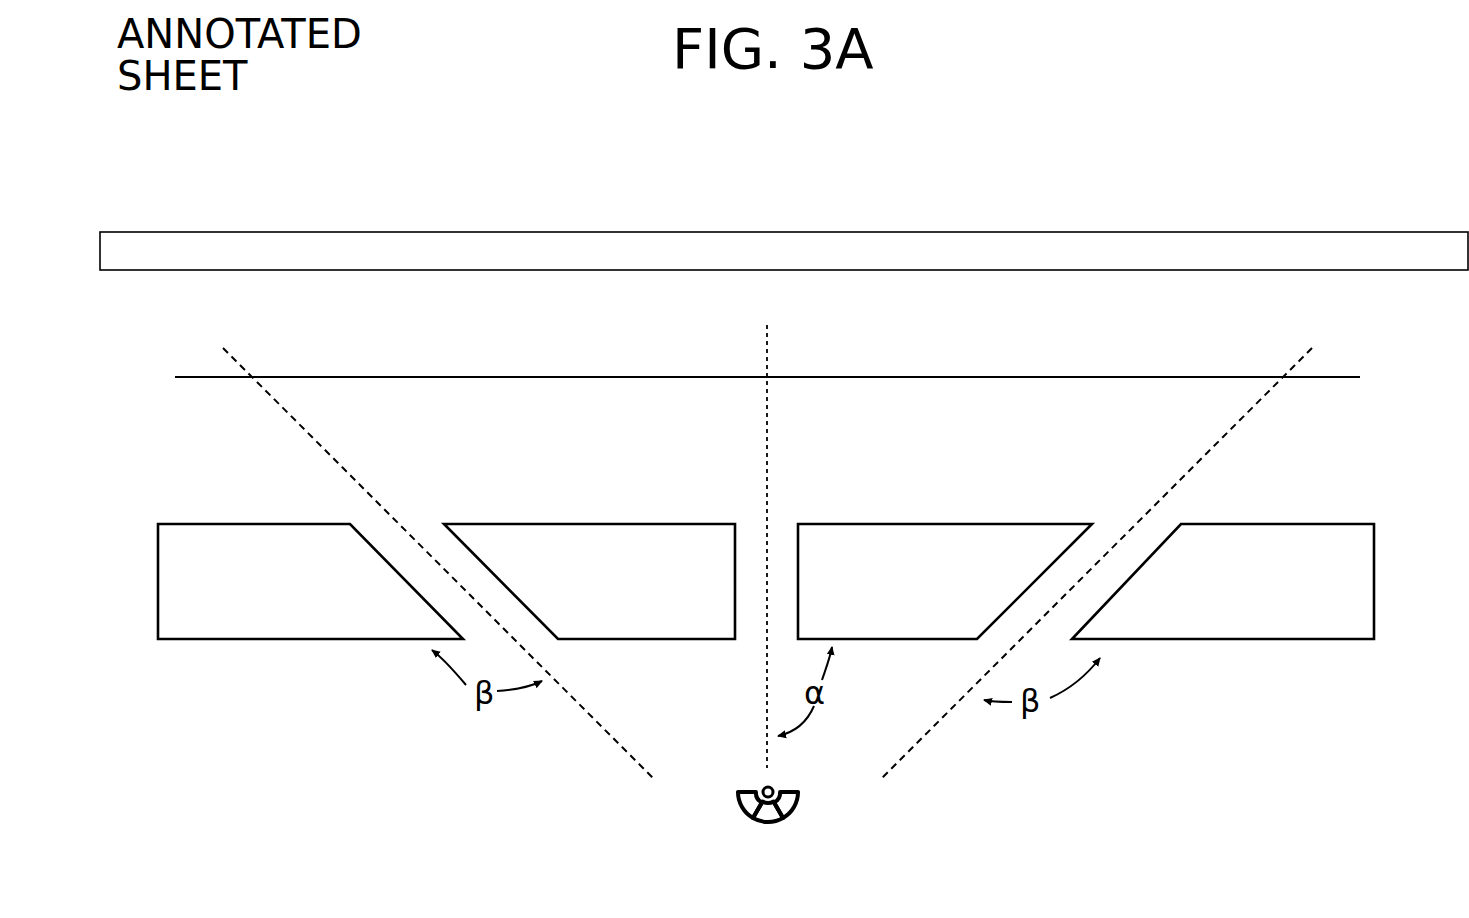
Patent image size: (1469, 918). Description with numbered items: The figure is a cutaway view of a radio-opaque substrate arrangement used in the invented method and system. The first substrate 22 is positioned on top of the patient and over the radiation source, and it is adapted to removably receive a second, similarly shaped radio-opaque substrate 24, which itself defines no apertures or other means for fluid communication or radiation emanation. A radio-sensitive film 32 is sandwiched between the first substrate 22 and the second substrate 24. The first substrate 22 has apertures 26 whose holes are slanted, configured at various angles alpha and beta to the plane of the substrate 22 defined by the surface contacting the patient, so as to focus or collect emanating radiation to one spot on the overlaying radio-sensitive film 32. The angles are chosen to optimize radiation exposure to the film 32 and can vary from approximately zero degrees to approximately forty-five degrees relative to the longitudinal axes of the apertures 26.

The first substrate 22 is at (256, 620).
The second radio-opaque substrate 24 is at (513, 246).
The apertures 26 is at (748, 636).
The radio-sensitive film 32 is at (1090, 377).